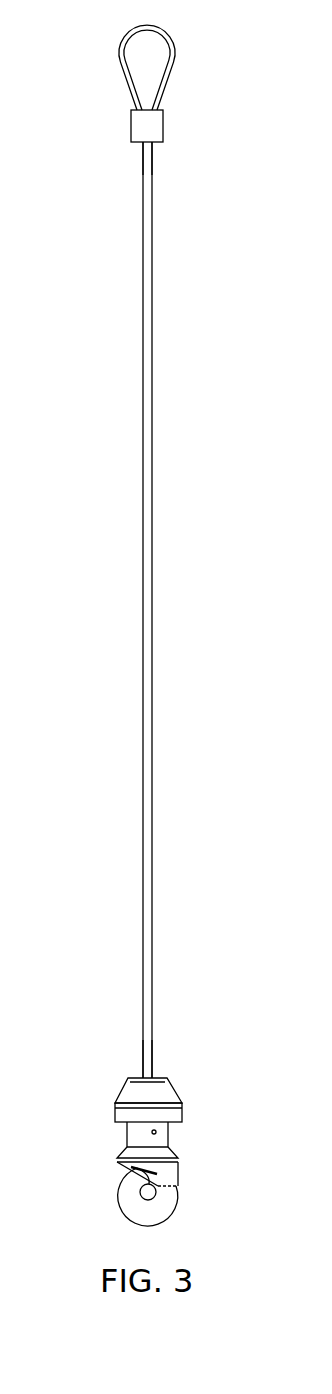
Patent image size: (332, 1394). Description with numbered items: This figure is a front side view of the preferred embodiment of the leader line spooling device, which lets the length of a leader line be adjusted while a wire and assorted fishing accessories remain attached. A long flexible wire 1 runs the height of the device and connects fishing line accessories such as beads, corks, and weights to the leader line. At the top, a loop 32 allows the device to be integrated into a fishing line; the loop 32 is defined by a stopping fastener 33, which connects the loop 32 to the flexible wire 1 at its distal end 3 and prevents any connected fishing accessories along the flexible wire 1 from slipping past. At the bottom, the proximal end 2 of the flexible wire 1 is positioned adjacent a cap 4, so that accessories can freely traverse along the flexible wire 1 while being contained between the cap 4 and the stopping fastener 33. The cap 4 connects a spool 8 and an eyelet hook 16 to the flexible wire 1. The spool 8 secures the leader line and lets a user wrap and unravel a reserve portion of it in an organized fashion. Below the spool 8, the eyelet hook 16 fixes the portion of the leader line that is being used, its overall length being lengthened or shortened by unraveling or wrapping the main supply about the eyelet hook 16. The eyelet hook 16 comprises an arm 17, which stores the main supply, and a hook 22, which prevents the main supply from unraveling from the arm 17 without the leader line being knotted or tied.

The flexible wire 1 is at (140, 758).
The proximal end 2 is at (142, 1072).
The distal end 3 is at (141, 151).
The cap 4 is at (170, 1098).
The spool 8 is at (166, 1137).
The eyelet hook 16 is at (117, 1198).
The arm 17 is at (176, 1175).
The hook 22 is at (130, 1208).
The loop 32 is at (167, 37).
The stopping fastener 33 is at (162, 122).